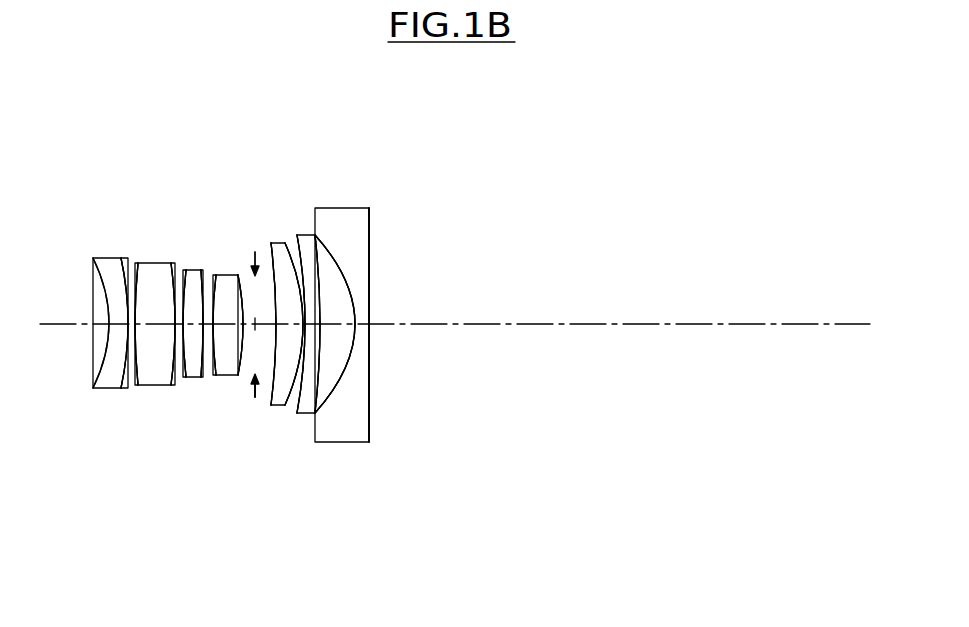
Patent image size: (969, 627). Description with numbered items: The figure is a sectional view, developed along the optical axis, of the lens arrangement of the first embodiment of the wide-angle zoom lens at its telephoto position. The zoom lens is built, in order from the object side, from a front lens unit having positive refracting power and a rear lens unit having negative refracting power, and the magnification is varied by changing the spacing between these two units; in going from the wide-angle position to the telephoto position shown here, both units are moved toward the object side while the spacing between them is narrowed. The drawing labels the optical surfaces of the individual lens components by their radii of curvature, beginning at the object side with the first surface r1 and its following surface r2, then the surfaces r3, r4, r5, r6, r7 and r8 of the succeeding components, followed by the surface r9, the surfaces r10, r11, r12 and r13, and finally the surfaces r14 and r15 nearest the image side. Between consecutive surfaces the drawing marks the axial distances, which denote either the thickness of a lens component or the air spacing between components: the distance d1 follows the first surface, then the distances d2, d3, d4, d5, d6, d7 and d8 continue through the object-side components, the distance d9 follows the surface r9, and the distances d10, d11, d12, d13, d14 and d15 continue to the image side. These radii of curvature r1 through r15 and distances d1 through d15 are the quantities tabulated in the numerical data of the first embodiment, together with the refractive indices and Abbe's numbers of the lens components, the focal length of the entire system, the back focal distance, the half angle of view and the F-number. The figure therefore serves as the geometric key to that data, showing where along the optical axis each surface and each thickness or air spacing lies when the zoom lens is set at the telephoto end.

The radius of curvature of first surface r1 is at (75, 229).
The radius of curvature of second surface r2 is at (98, 246).
The radius of curvature of third surface r3 is at (116, 228).
The radius of curvature of fourth surface r4 is at (151, 245).
The radius of curvature of fifth surface r5 is at (174, 224).
The radius of curvature of sixth surface r6 is at (197, 241).
The radius of curvature of seventh surface r7 is at (225, 223).
The radius of curvature of eighth surface r8 is at (254, 240).
The radius of curvature of ninth surface r9 is at (278, 234).
The radius of curvature of tenth surface r10 is at (305, 255).
The radius of curvature of eleventh surface r11 is at (326, 238).
The radius of curvature of twelfth surface r12 is at (347, 259).
The radius of curvature of thirteenth surface r13 is at (370, 242).
The radius of curvature of fourteenth surface r14 is at (388, 259).
The radius of curvature of fifteenth surface r15 is at (429, 256).
The first thickness or air spacing d1 is at (79, 418).
The second thickness or air spacing d2 is at (103, 403).
The third thickness or air spacing d3 is at (135, 421).
The fourth thickness or air spacing d4 is at (156, 405).
The fifth thickness or air spacing d5 is at (179, 424).
The sixth thickness or air spacing d6 is at (201, 409).
The seventh thickness or air spacing d7 is at (228, 427).
The eighth thickness or air spacing d8 is at (256, 411).
The ninth thickness or air spacing d9 is at (279, 411).
The tenth thickness or air spacing d10 is at (307, 395).
The eleventh thickness or air spacing d11 is at (327, 407).
The twelfth thickness or air spacing d12 is at (349, 391).
The thirteenth thickness or air spacing d13 is at (372, 407).
The fourteenth thickness or air spacing d14 is at (391, 378).
The fifteenth thickness or air spacing d15 is at (432, 393).